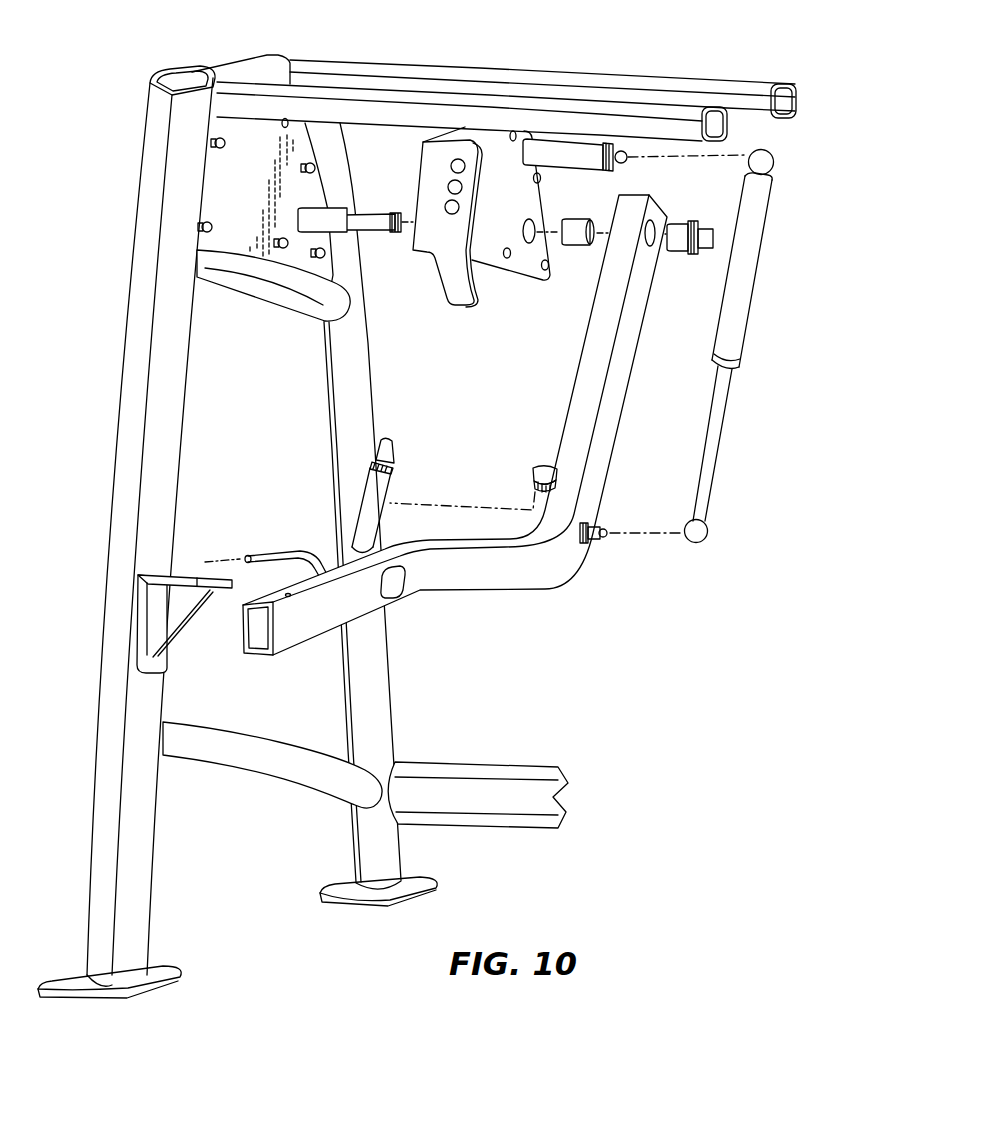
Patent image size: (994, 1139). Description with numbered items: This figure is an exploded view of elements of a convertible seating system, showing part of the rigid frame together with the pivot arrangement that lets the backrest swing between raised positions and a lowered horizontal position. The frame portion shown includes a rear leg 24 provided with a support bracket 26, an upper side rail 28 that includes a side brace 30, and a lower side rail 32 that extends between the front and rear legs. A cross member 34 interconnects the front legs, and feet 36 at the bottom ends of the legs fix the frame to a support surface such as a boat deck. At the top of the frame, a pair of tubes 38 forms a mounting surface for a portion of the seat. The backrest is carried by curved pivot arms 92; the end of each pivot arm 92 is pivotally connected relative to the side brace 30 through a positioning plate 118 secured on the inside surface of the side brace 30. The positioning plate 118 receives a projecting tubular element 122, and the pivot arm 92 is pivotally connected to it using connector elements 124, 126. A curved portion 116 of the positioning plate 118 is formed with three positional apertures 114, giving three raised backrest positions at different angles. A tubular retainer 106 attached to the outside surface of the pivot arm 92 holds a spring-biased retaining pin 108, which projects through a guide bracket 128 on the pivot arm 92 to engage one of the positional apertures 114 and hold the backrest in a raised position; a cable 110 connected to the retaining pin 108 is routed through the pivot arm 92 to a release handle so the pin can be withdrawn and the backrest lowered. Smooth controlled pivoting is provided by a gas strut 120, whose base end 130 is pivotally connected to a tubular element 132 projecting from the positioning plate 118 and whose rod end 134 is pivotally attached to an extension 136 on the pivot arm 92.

The rear legs 24 is at (120, 513).
The support brackets 26 is at (180, 576).
The upper side rails 28 is at (263, 278).
The side braces 30 is at (230, 181).
The lower side rails 32 is at (260, 752).
The cross members 34 is at (497, 793).
The feet 36 is at (88, 990).
The tubes 38 is at (503, 100).
The pivot arms 92 is at (533, 563).
The tubular retainers 106 is at (383, 487).
The retaining pins 108 is at (386, 442).
The cables 110 is at (283, 548).
The positional apertures 114 is at (445, 210).
The curved portions 116 is at (420, 238).
The positioning plates 118 is at (487, 234).
The gas struts 120 is at (738, 313).
The tubular element 122 is at (381, 228).
The connector element 124 is at (677, 245).
The connector element 126 is at (580, 244).
The guide bracket 128 is at (543, 466).
The base end 130 is at (773, 165).
The tubular element 132 is at (612, 162).
The rod end 134 is at (708, 535).
The extension 136 is at (598, 525).